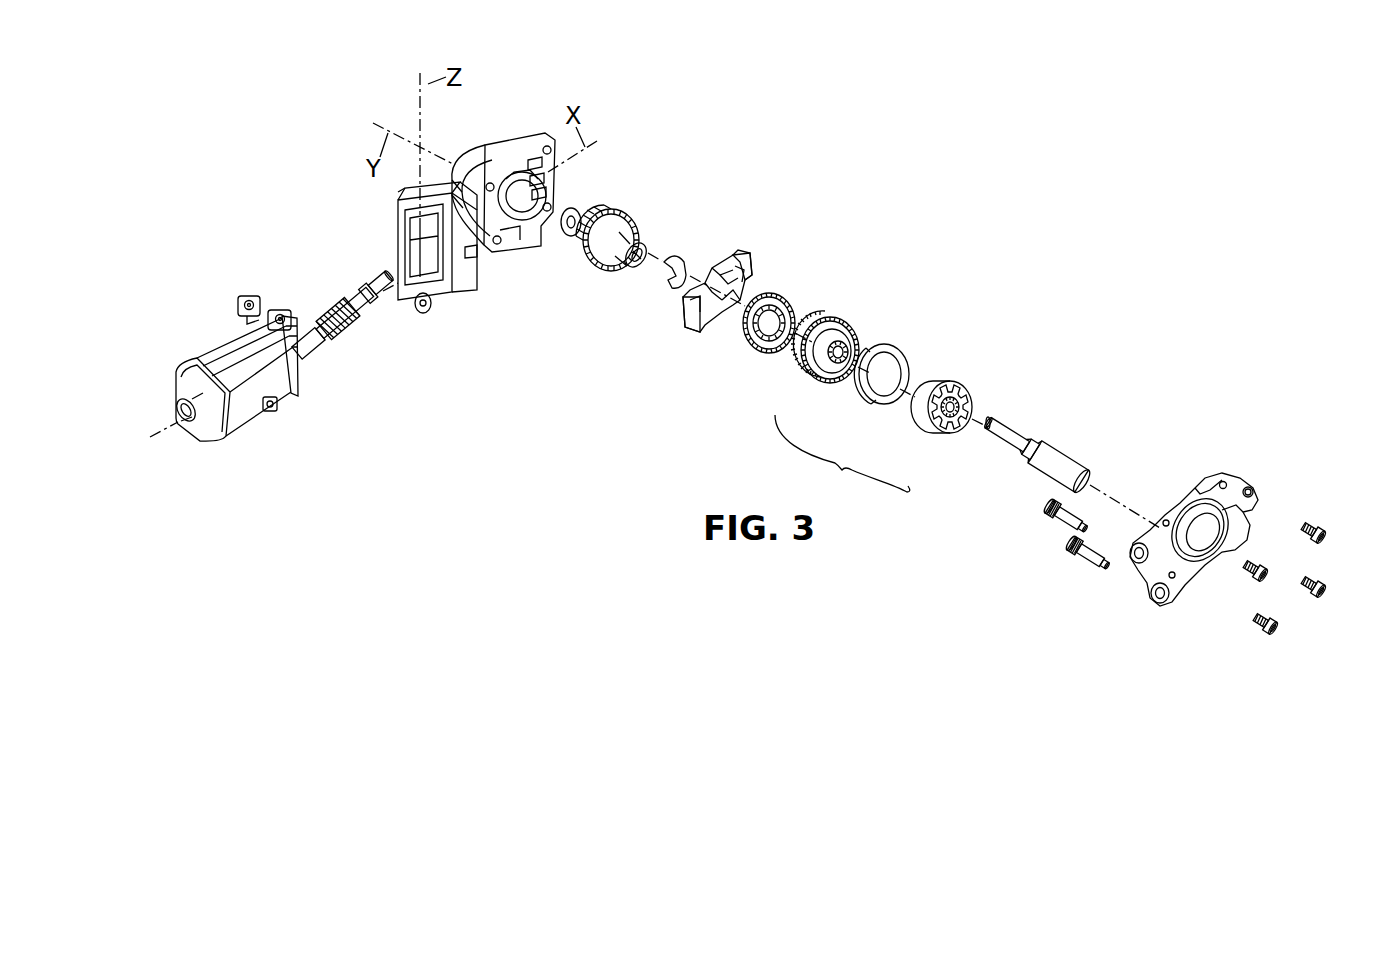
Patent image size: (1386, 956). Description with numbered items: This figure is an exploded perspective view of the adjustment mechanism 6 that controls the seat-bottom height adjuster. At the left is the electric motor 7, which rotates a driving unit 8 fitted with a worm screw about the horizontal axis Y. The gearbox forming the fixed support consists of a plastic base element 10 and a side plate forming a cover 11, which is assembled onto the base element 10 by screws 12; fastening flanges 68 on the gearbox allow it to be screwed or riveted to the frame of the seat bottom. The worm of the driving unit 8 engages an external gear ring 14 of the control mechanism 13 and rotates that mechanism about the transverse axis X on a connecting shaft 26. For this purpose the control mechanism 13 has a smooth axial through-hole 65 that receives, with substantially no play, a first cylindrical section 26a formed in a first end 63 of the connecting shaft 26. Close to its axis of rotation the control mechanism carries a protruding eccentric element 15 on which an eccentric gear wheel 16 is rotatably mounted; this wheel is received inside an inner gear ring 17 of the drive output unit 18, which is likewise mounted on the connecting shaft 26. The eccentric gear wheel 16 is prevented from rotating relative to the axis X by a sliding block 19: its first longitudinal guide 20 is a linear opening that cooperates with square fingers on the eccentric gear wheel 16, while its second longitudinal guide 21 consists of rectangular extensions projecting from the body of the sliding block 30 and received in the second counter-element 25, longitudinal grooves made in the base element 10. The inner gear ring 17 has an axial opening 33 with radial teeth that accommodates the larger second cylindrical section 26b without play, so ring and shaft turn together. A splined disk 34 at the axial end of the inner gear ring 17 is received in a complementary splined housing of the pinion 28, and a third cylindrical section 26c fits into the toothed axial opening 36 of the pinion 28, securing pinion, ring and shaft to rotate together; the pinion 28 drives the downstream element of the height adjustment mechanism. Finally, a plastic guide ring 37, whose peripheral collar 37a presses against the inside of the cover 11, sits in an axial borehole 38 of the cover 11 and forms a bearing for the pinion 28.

The adjustment mechanism 6 is at (568, 406).
The electric motor 7 is at (213, 362).
The driving unit 8 is at (333, 301).
The base element 10 is at (527, 125).
The cover 11 is at (1250, 485).
The screws 12 is at (1220, 628).
The control mechanism 13 is at (686, 176).
The external gear ring 14 is at (597, 270).
The eccentric element 15 is at (640, 236).
The eccentric gear wheel 16 is at (758, 353).
The inner gear ring 17 is at (818, 382).
The drive output unit 18 is at (842, 457).
The sliding block 19 is at (745, 268).
The first longitudinal guide 20 is at (738, 260).
The second longitudinal guide 21 is at (753, 287).
The second counter-element 25 is at (542, 193).
The connecting shaft 26 is at (1045, 412).
The first cylindrical section 26a is at (1008, 437).
The second cylindrical section 26b is at (1028, 455).
The third cylindrical section 26c is at (1047, 457).
The pinion 28 is at (925, 425).
The body of the sliding block 30 is at (701, 358).
The axial opening 33 is at (847, 347).
The splined disk 34 is at (829, 318).
The axial opening 36 is at (958, 427).
The guide ring 37 is at (893, 350).
The peripheral collar 37a is at (868, 403).
The axial borehole 38 is at (1219, 528).
The first end 63 is at (983, 400).
The axial through-hole 65 is at (637, 266).
The fastening flanges 68 is at (1160, 598).